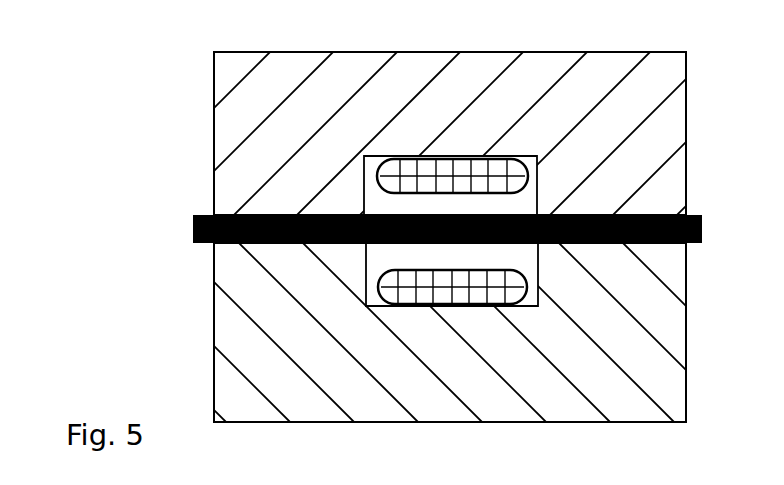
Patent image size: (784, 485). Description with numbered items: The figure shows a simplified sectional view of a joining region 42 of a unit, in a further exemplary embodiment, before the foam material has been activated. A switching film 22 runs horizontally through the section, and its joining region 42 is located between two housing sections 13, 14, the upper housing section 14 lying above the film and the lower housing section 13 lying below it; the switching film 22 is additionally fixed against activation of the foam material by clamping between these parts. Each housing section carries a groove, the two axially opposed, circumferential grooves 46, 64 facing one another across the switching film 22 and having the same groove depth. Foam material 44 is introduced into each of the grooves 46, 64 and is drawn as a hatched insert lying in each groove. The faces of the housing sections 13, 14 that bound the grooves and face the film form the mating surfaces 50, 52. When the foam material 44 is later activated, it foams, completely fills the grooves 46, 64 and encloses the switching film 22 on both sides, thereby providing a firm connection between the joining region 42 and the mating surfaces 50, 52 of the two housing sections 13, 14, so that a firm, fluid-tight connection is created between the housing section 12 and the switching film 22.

The housing section 12 is at (415, 237).
The housing section 14 is at (235, 162).
The housing section 13 is at (240, 330).
The switching film 22 is at (694, 215).
The joining region 42 is at (500, 247).
The foam material 44 is at (423, 168).
The groove 46 is at (367, 307).
The mating surface 50 is at (455, 306).
The mating surface 52 is at (477, 156).
The groove 64 is at (367, 156).